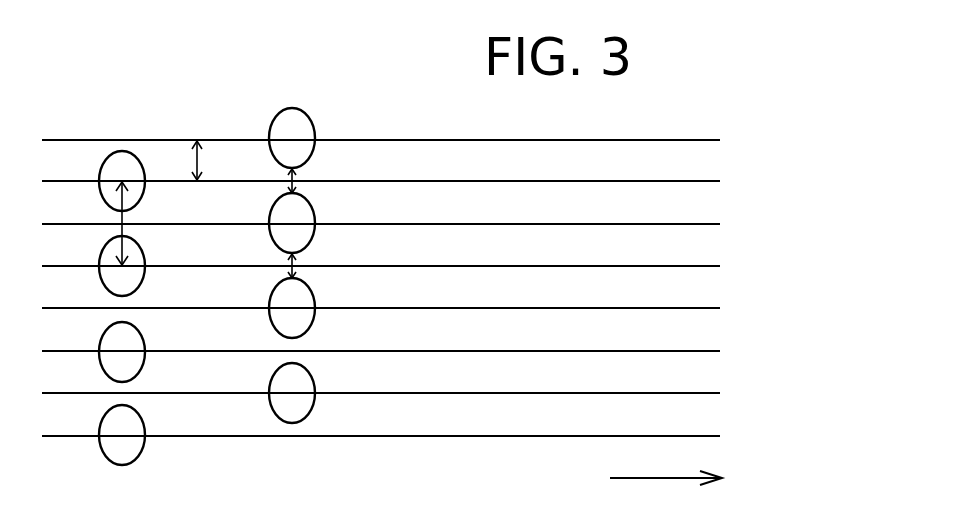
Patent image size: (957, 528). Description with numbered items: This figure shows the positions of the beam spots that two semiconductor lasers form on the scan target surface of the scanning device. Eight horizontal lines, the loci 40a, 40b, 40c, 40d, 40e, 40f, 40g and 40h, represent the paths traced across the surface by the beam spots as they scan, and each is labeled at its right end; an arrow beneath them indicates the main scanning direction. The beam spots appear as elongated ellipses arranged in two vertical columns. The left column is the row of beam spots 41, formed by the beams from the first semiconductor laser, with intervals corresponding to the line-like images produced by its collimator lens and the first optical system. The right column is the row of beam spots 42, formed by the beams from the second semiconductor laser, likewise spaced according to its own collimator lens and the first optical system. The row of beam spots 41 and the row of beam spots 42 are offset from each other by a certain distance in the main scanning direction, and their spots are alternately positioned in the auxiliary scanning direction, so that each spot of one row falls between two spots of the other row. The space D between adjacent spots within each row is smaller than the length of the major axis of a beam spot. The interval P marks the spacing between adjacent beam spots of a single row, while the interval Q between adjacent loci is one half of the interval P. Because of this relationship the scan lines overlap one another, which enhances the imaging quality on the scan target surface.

The locus 40a is at (410, 140).
The locus 40b is at (410, 181).
The locus 40c is at (410, 224).
The locus 40d is at (410, 266).
The locus 40e is at (410, 308).
The locus 40f is at (408, 351).
The locus 40g is at (410, 393).
The locus 40h is at (410, 436).
The row of beam spots 41 is at (140, 450).
The row of beam spots 42 is at (312, 118).
The interval between adjacent beam spots P is at (118, 218).
The interval between adjacent loci Q is at (186, 158).
The space of the beam spots D is at (287, 173).